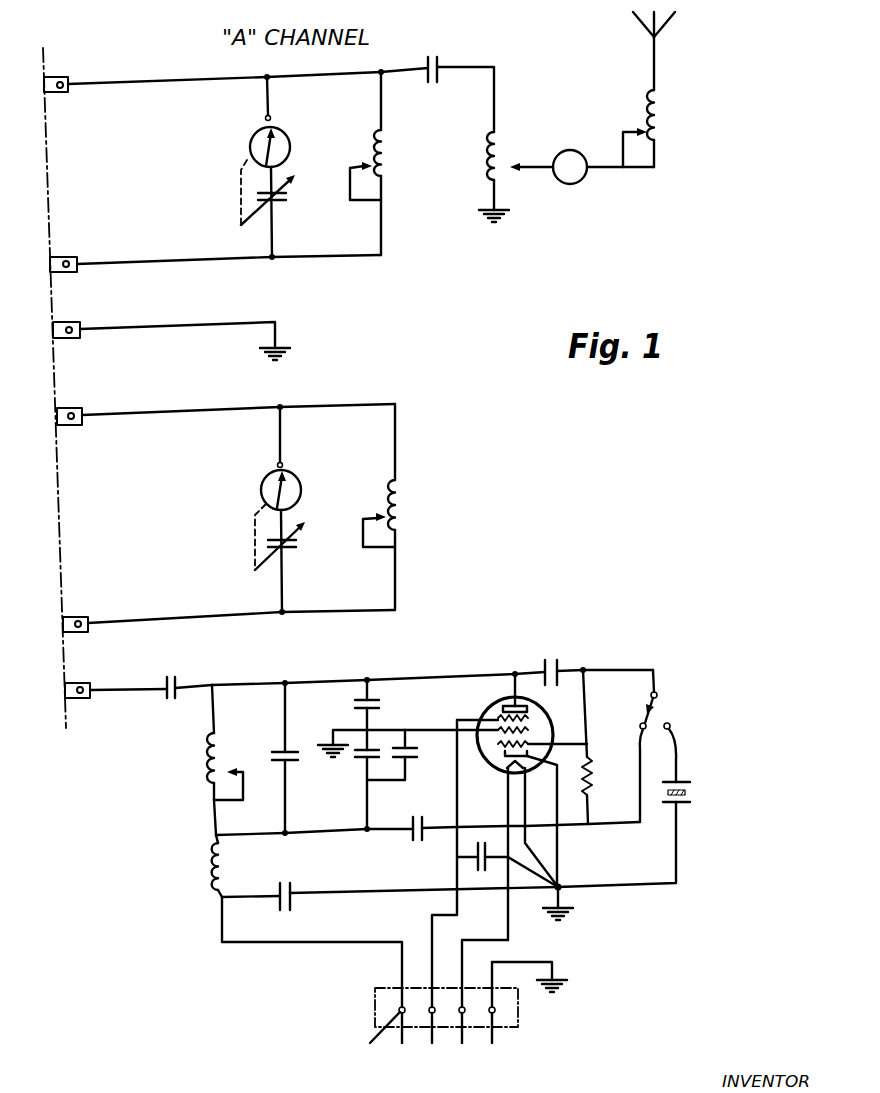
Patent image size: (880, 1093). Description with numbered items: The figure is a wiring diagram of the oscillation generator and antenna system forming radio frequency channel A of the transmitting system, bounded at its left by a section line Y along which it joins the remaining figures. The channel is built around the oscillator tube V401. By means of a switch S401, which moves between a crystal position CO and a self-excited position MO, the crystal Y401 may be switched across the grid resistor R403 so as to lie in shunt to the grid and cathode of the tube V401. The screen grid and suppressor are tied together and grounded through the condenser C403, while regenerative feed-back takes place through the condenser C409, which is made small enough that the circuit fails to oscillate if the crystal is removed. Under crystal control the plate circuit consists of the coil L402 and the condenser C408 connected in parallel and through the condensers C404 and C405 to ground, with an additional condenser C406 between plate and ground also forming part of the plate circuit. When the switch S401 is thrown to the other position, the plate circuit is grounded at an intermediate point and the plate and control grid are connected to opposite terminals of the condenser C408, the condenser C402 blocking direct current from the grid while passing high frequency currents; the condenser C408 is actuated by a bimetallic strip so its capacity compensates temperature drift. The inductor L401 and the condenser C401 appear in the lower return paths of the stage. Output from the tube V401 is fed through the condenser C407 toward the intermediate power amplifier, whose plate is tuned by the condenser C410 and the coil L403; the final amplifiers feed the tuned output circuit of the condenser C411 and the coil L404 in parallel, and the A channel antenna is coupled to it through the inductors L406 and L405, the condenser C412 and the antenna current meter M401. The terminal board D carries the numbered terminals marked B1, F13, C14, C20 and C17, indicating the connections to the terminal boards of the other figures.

The section line Y is at (55, 390).
The condenser C411 is at (251, 130).
The coil L404 is at (370, 152).
The condenser C412 is at (425, 82).
The inductor L405 is at (488, 156).
The antenna current meter M401 is at (585, 141).
The inductor L406 is at (668, 118).
The condenser C410 is at (262, 473).
The coil L403 is at (408, 506).
The condenser C407 is at (178, 676).
The coil L402 is at (206, 752).
The condenser C408 is at (282, 748).
The condenser C406 is at (355, 703).
The condenser C404 is at (356, 763).
The condenser C405 is at (421, 765).
The tube V401 is at (487, 703).
The condenser C409 is at (549, 659).
The switch S401 is at (660, 706).
The master oscillator switch contact MO is at (628, 768).
The crystal oscillator switch contact CO is at (681, 750).
The crystal Y401 is at (689, 805).
The grid resistor R403 is at (590, 787).
The condenser C402 is at (415, 841).
The condenser C403 is at (472, 867).
The inductor L401 is at (233, 858).
The capacitor C401 is at (287, 913).
The terminal board D is at (375, 1007).
The terminal lead B1 is at (378, 1048).
The terminal lead F13 is at (320, 992).
The terminal lead C14 is at (438, 903).
The terminal lead C20 is at (478, 1013).
The terminal lead C17 is at (523, 1023).